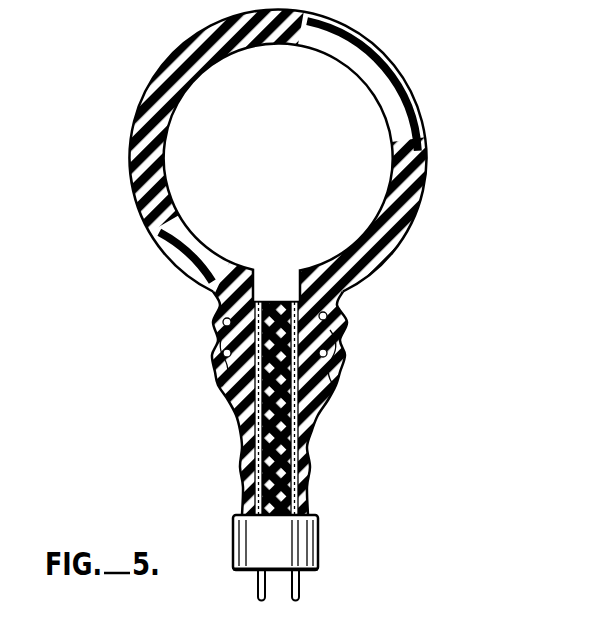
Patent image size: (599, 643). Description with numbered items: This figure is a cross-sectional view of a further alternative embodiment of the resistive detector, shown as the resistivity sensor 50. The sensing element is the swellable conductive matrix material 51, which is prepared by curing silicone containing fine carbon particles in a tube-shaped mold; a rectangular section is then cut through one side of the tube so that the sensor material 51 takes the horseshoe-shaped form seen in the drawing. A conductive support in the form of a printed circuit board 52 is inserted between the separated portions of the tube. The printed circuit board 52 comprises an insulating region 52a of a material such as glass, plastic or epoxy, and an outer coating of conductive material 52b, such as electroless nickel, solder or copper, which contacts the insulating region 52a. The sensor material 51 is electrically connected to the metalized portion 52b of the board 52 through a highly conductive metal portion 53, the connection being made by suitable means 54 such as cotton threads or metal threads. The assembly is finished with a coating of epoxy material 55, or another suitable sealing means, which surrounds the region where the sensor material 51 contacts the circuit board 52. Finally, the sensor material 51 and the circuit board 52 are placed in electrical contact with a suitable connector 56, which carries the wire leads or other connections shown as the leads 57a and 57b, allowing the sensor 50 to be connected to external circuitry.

The resistivity sensor 50 is at (444, 103).
The swellable conductive matrix material 51 is at (420, 157).
The printed circuit board 52 is at (299, 404).
The insulating region 52a is at (280, 480).
The conductive material coating 52b is at (297, 498).
The highly conductive metal portion 53 is at (310, 418).
The connecting means 54 is at (328, 318).
The epoxy coating 55 is at (340, 365).
The connector 56 is at (300, 552).
The wire lead 57a is at (258, 587).
The wire lead 57b is at (299, 587).